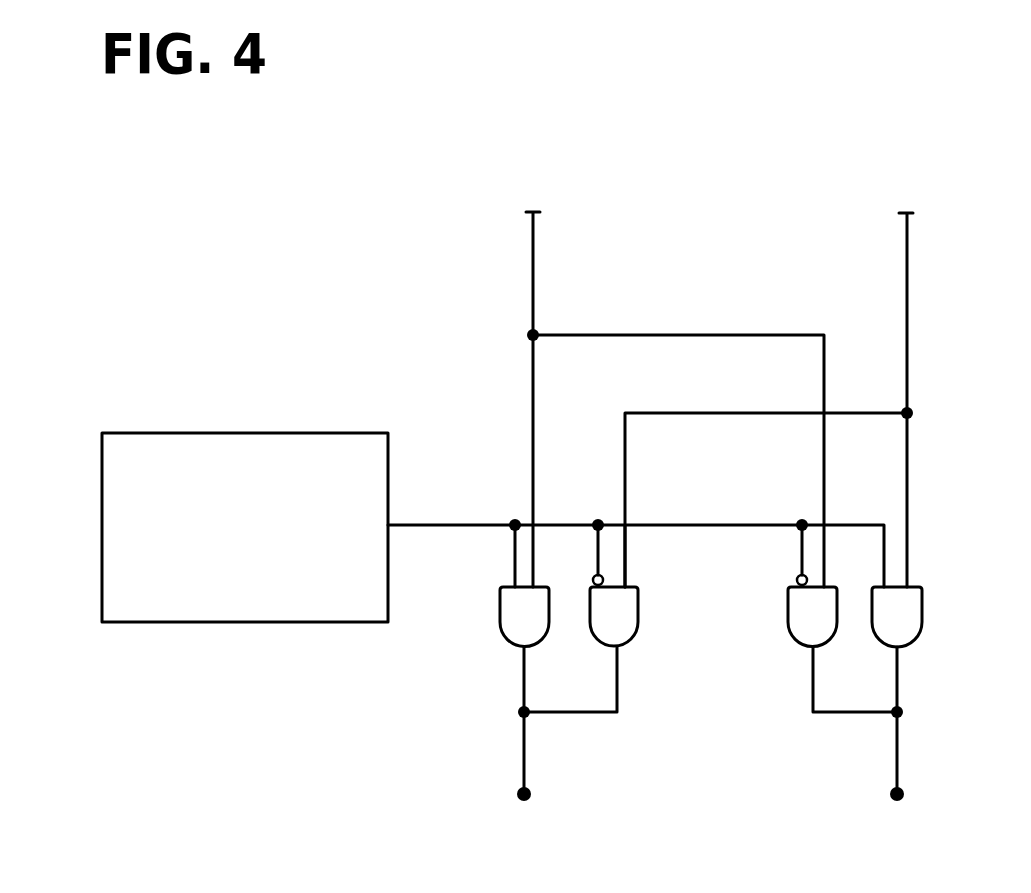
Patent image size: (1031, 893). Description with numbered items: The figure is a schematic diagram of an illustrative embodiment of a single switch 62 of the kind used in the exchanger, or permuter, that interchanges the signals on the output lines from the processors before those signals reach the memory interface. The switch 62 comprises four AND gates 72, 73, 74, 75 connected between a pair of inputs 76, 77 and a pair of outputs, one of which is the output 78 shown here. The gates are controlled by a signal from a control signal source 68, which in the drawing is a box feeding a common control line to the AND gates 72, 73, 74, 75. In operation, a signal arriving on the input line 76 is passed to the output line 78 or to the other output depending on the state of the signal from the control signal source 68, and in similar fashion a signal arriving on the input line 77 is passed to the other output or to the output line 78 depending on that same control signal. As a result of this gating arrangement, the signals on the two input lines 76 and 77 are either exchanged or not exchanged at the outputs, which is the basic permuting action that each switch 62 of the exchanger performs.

The switch 62 is at (1029, 525).
The control signal source 68 is at (367, 612).
The AND gate 72 is at (514, 634).
The AND gate 73 is at (631, 637).
The AND gate 74 is at (799, 631).
The AND gate 75 is at (906, 636).
The input 76 is at (534, 369).
The input 77 is at (908, 362).
The output 78 is at (525, 764).